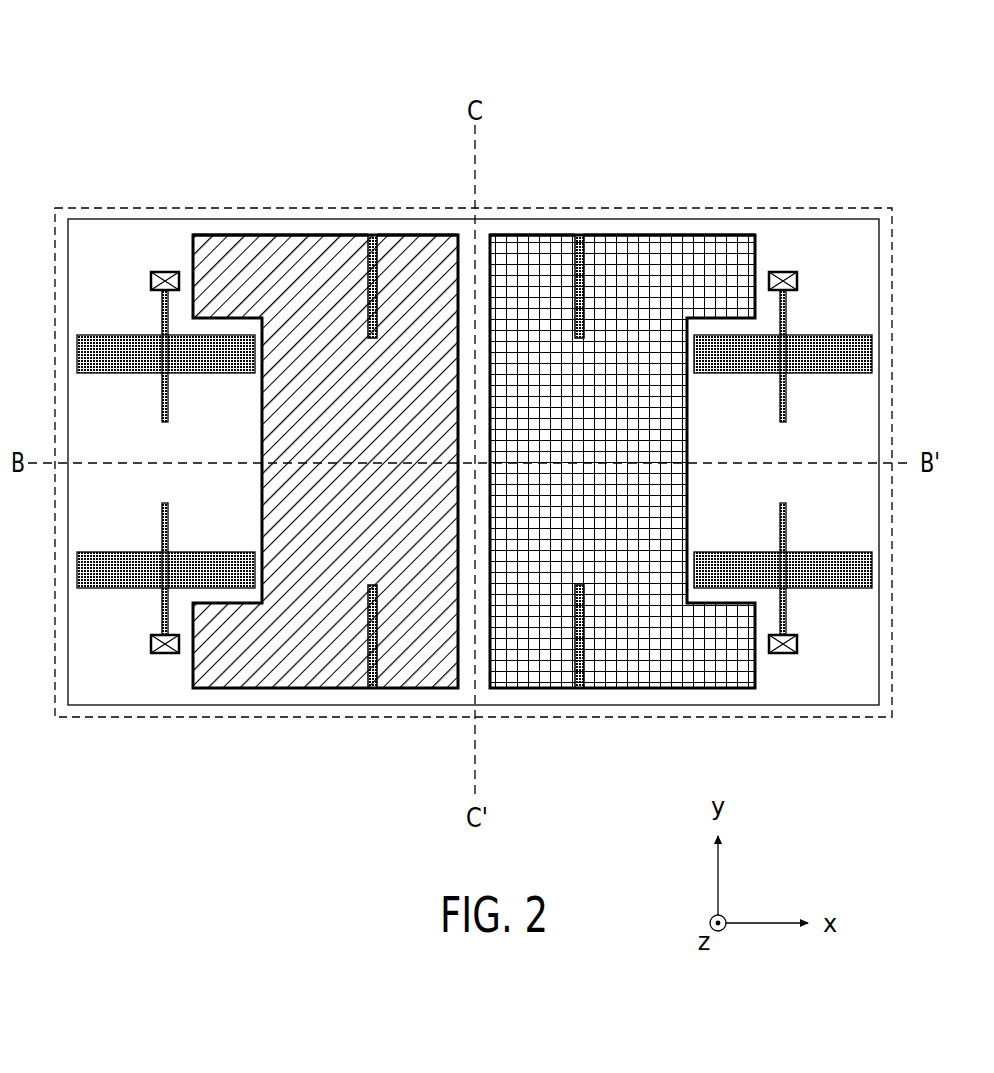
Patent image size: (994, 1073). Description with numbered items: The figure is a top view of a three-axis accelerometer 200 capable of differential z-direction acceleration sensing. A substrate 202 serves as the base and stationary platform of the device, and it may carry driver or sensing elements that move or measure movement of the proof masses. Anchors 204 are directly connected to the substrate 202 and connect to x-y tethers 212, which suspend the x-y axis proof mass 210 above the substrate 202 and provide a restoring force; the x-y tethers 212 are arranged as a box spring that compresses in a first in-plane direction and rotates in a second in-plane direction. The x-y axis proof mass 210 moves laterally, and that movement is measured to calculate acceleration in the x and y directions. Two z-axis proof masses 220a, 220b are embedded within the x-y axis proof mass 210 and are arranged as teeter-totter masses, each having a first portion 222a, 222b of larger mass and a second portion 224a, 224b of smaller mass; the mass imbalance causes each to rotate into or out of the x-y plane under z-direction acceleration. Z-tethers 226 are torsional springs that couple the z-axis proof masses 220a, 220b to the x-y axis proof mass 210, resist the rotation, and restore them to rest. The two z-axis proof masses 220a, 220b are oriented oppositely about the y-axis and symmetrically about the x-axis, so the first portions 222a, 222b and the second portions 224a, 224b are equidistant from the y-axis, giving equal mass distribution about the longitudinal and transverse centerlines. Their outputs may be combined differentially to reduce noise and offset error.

The three-axis accelerometer 200 is at (170, 96).
The substrate 202 is at (873, 718).
The anchors 204 is at (165, 280).
The x-y axis proof mass 210 is at (467, 235).
The x-y tethers 212 is at (127, 355).
The z-axis proof mass 220a is at (325, 362).
The z-axis proof mass 220b is at (619, 357).
The first portion 222a is at (278, 240).
The first portion 222b is at (668, 240).
The second portion 224a is at (423, 238).
The second portion 224b is at (522, 240).
The z-tethers 226 is at (372, 238).